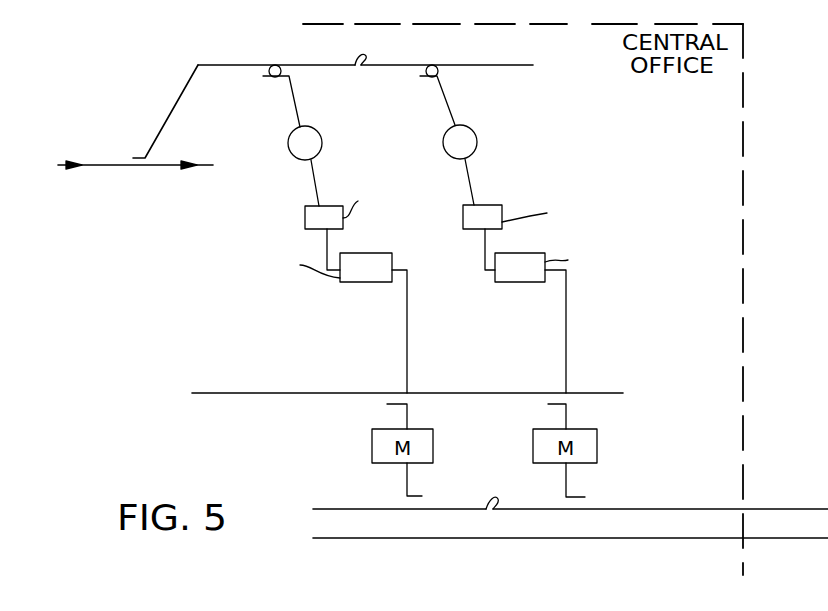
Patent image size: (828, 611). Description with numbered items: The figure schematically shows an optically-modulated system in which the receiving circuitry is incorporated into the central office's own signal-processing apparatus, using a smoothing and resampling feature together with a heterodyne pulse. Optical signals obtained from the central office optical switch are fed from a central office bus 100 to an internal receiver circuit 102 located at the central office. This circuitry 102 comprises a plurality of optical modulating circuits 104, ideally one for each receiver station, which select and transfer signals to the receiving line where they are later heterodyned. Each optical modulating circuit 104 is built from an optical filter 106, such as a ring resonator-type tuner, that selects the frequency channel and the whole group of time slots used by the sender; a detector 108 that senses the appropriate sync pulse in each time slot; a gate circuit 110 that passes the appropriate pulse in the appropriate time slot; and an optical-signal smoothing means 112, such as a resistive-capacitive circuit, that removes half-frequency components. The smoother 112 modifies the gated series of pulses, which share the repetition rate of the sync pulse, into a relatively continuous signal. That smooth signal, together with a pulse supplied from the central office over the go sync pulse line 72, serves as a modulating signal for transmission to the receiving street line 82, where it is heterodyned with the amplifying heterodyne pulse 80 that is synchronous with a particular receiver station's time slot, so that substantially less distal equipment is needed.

The central office bus 100 is at (118, 167).
The internal receiver circuit 102 is at (402, 65).
The optical modulating circuit 104 is at (338, 301).
The optical filter 106 is at (281, 68).
The detector 108 is at (322, 143).
The gate circuit 110 is at (305, 218).
The optical-signal smoothing means 112 is at (380, 253).
The GO SYN pulse line 72 is at (240, 394).
The heterodyne pulse 80 is at (817, 528).
The street line 82 is at (767, 508).